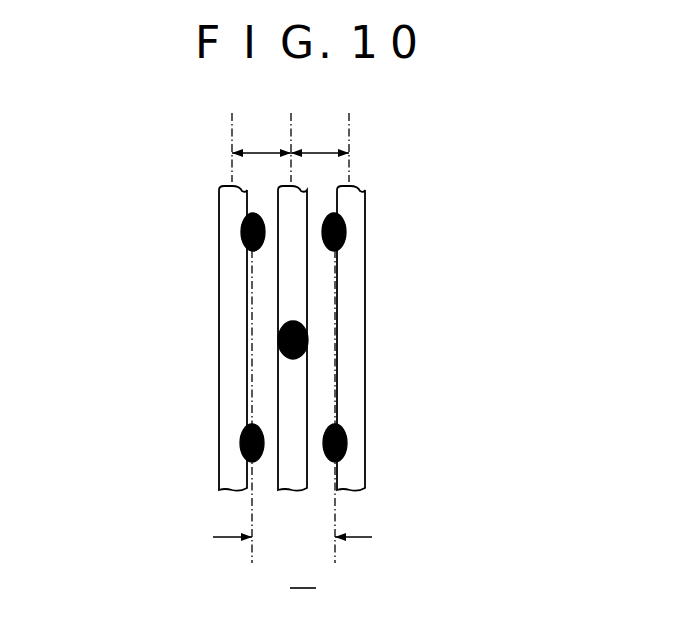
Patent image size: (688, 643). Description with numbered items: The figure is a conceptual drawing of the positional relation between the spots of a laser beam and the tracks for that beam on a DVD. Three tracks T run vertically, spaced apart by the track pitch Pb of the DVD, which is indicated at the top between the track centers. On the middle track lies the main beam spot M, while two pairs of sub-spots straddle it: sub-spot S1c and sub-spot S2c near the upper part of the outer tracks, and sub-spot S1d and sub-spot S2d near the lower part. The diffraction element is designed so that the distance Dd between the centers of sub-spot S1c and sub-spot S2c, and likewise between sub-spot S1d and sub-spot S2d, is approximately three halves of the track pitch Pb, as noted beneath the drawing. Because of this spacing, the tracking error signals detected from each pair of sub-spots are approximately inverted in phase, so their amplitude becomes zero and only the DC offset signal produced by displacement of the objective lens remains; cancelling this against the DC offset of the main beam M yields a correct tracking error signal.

The tape strip T is at (232, 306).
The mark M is at (280, 340).
The sub-spot S1c is at (342, 229).
The sub-spot S2c is at (245, 233).
The sub-spot S1d is at (245, 447).
The sub-spot S2d is at (345, 443).
The track pitch Pb is at (290, 147).
The distance Dd is at (292, 433).